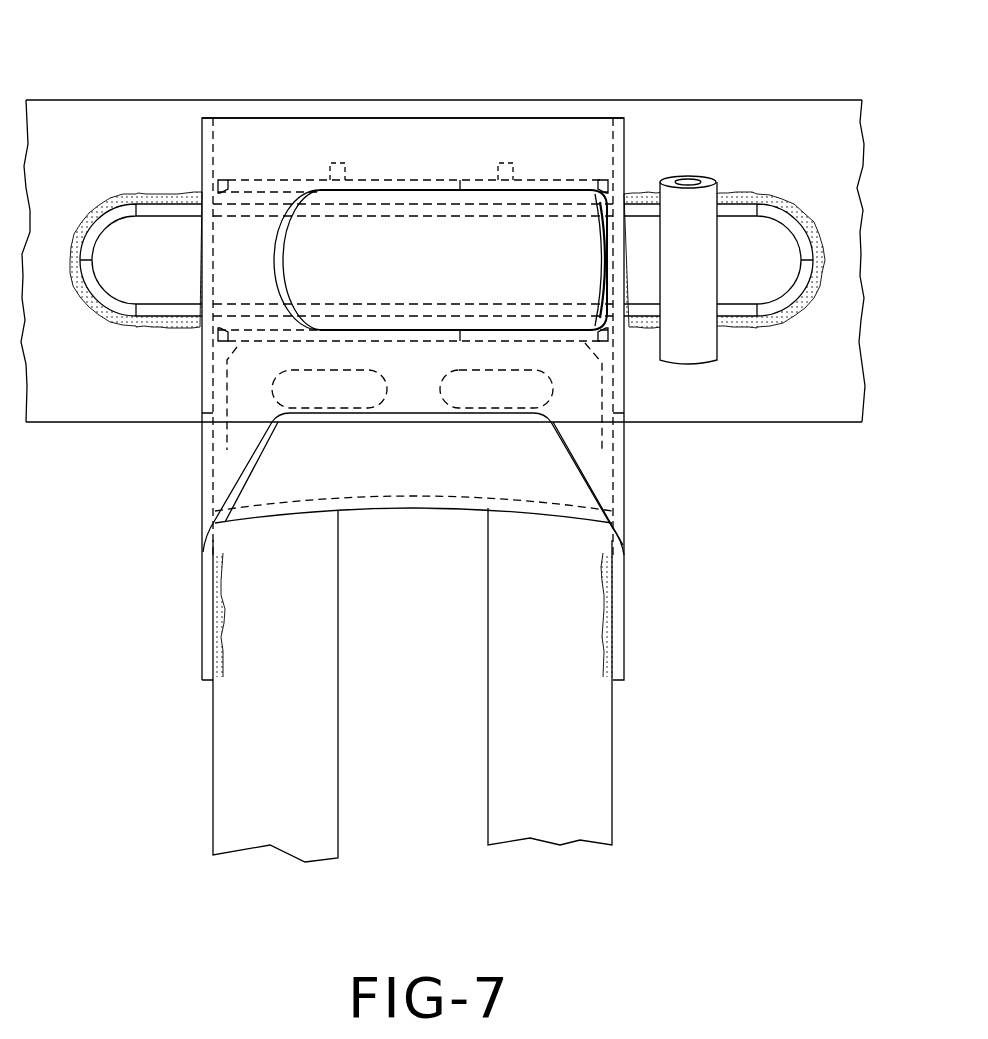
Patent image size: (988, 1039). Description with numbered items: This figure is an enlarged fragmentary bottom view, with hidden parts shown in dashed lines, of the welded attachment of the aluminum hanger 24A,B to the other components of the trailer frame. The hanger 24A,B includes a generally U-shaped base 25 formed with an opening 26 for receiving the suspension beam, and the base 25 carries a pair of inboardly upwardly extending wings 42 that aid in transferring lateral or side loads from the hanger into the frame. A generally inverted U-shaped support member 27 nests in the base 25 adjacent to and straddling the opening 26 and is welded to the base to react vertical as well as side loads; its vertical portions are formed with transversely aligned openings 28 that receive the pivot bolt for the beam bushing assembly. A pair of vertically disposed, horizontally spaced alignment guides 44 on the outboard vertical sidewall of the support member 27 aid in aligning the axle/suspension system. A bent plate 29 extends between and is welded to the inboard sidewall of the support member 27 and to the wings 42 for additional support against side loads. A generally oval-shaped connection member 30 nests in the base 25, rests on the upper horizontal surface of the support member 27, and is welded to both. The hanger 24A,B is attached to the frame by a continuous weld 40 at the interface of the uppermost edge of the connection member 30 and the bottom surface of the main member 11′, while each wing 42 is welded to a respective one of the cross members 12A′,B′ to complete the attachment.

The main member 11′ is at (97, 422).
The cross members 12A′,B′ is at (338, 780).
The hanger 24A,B is at (630, 146).
The U-shaped base 25 is at (235, 118).
The opening 26 is at (497, 185).
The support member 27 is at (268, 183).
The openings 28 is at (387, 183).
The bent plate 29 is at (467, 500).
The connection member 30 is at (743, 210).
The continuous weld 40 is at (98, 210).
The wings 42 is at (207, 615).
The alignment guides 44 is at (345, 163).